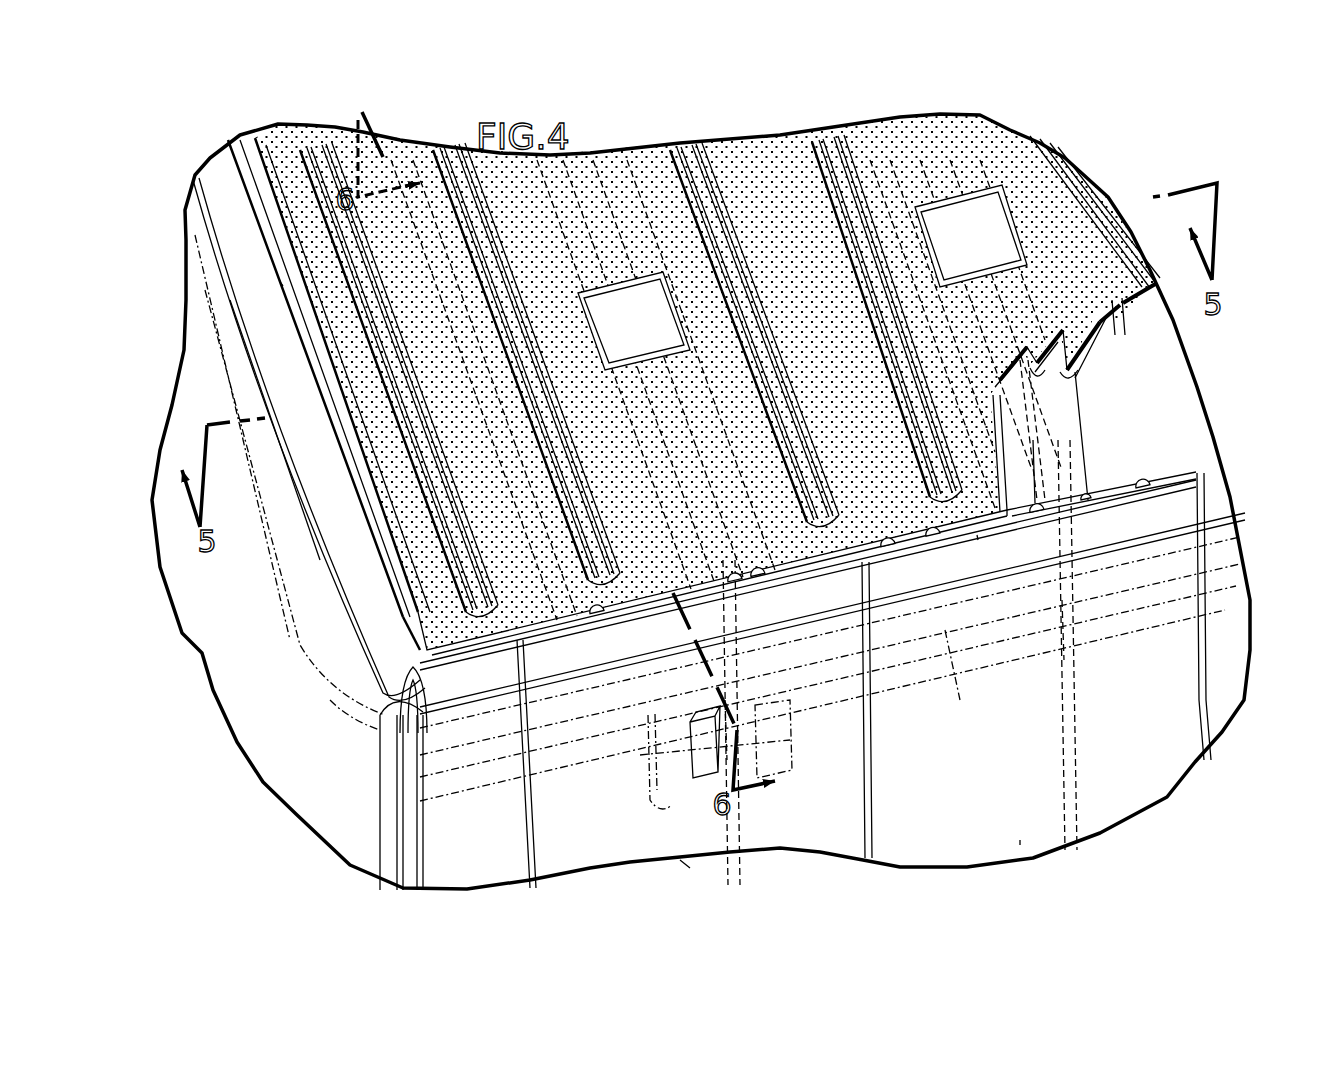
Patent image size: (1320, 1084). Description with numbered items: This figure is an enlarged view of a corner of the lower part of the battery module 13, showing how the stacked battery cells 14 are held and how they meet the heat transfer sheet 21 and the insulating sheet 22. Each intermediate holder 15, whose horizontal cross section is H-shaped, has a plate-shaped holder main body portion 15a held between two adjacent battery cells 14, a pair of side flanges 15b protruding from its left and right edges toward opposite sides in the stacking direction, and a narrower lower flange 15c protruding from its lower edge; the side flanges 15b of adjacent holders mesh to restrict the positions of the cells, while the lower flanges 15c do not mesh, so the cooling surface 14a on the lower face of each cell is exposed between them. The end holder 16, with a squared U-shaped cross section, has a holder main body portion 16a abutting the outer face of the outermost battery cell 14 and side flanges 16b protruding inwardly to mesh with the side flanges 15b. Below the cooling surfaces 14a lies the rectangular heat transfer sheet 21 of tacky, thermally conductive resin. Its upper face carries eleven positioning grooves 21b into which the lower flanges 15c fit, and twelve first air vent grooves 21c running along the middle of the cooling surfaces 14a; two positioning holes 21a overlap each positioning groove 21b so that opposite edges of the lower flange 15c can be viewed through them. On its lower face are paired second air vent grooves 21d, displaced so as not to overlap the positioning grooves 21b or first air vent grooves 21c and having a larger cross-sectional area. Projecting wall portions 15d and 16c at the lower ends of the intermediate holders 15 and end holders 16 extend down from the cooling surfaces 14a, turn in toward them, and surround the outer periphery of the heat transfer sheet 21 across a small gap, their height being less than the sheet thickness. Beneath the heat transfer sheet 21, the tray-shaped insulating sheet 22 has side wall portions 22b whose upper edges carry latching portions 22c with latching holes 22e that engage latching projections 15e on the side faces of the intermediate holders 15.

The battery module 13 is at (1125, 182).
The battery cell 14 is at (1180, 445).
The cooling surface 14a is at (1013, 497).
The intermediate holder 15 is at (850, 817).
The holder main body portion 15a is at (725, 832).
The side flange 15b is at (680, 848).
The lower flange 15c is at (592, 280).
The projecting wall portion 15d is at (1140, 485).
The latching projection 15e is at (697, 745).
The end holder 16 is at (255, 755).
The holder main body portion 16a is at (222, 620).
The side flange 16b is at (440, 843).
The projecting wall portion 16c is at (383, 597).
The heat transfer sheet 21 is at (325, 376).
The positioning hole 21a is at (634, 272).
The positioning groove 21b is at (1053, 420).
The first air vent groove 21c is at (547, 615).
The second air vent groove 21d is at (927, 443).
The insulating sheet 22 is at (270, 570).
The side wall portion 22b is at (335, 682).
The latching portion 22c is at (765, 745).
The latching hole 22e is at (680, 820).